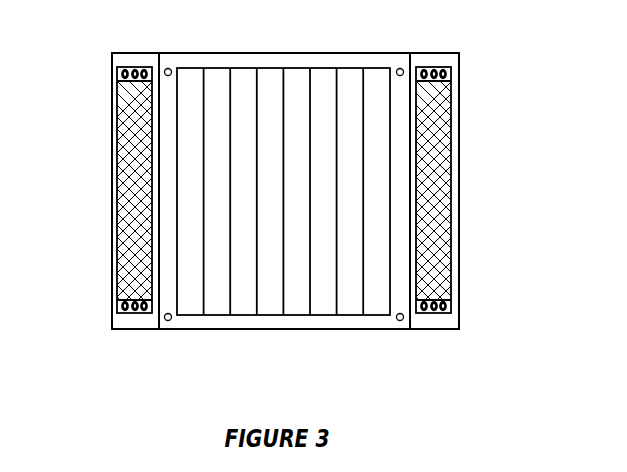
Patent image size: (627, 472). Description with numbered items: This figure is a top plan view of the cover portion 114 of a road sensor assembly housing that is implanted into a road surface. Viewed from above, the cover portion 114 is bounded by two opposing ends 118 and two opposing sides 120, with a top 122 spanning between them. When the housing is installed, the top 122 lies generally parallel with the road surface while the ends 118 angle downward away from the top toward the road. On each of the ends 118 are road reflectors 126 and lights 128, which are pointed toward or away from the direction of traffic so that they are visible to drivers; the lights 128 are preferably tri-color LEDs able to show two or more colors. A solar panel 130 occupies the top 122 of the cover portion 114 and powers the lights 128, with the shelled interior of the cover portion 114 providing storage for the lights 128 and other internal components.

The cover portion 114 is at (379, 31).
The opposing ends 118 is at (110, 268).
The opposing sides 120 is at (235, 53).
The top 122 is at (326, 60).
The road reflectors 126 is at (125, 203).
The lights 128 is at (120, 75).
The solar panel 130 is at (269, 303).